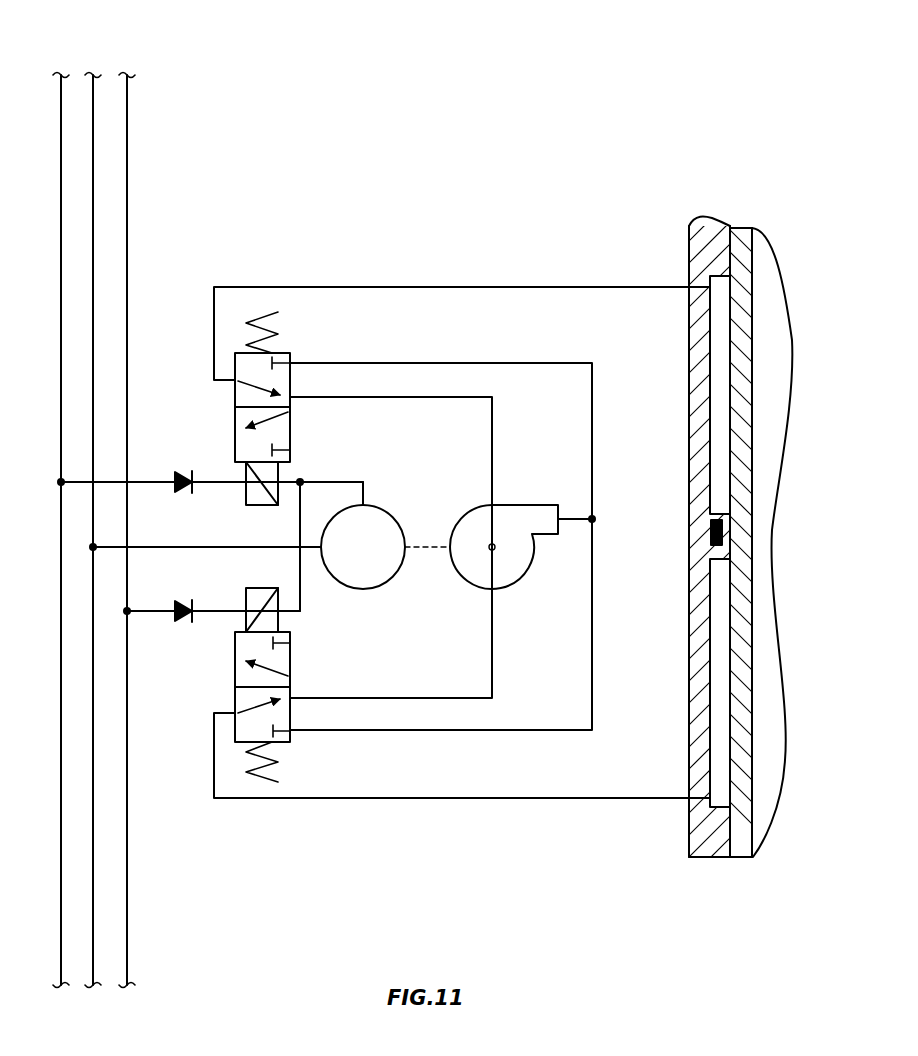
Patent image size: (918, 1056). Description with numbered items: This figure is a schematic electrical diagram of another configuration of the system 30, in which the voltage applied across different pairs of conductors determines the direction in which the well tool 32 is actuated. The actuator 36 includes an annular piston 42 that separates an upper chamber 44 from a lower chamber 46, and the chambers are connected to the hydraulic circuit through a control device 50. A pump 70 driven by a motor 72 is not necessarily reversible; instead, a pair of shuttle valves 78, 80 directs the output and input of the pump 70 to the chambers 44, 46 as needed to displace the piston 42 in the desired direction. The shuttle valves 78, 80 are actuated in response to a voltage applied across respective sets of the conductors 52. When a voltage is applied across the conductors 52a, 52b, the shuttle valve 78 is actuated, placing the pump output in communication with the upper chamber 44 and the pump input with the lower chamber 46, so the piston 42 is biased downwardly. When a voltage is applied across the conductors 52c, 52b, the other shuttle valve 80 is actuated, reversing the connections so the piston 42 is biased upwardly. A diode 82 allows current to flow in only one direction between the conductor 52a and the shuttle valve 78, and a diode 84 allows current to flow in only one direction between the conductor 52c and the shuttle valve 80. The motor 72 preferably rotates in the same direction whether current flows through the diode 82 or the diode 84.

The system 30 is at (625, 120).
The well tool 32 is at (695, 561).
The actuator 36 is at (689, 252).
The annular piston 42 is at (712, 555).
The upper chamber 44 is at (722, 333).
The lower chamber 46 is at (718, 672).
The control device 50 is at (433, 570).
The conductors 52 is at (137, 508).
The conductor 52a is at (61, 92).
The conductor 52b is at (93, 88).
The conductor 52c is at (127, 133).
The pump 70 is at (527, 505).
The motor 72 is at (388, 505).
The shuttle valve 78 is at (235, 421).
The shuttle valve 80 is at (291, 662).
The diode 82 is at (185, 488).
The diode 84 is at (185, 619).